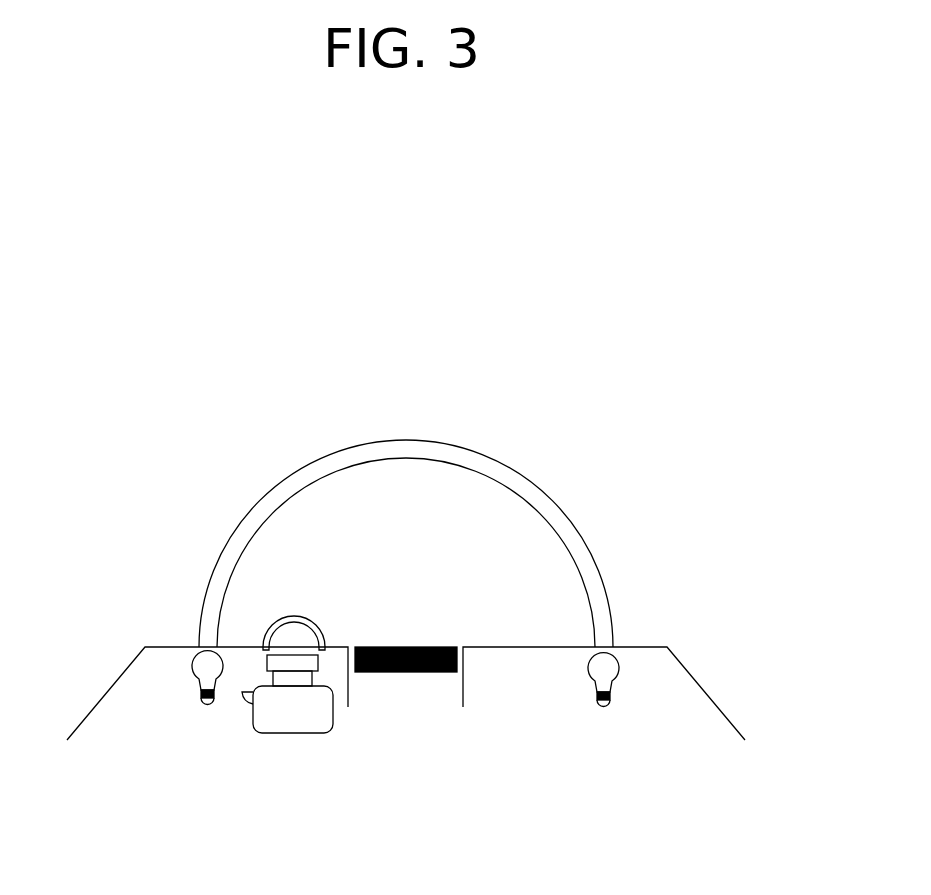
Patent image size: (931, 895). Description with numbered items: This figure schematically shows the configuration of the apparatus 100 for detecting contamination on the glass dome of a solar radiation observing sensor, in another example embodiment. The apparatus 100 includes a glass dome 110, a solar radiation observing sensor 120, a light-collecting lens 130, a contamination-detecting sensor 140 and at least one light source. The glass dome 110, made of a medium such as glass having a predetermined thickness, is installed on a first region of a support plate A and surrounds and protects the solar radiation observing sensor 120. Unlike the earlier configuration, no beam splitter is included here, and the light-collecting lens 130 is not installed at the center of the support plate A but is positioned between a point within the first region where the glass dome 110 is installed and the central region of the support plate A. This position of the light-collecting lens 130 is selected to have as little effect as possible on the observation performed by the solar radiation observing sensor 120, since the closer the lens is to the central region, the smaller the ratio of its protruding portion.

The apparatus for detecting contamination on the glass dome 100 is at (174, 313).
The glass dome 110 is at (330, 462).
The solar radiation observing sensor 120 is at (442, 645).
The light-collecting lens 130 is at (297, 619).
The contamination-detecting sensor 140 is at (296, 723).
The support plate A is at (712, 698).